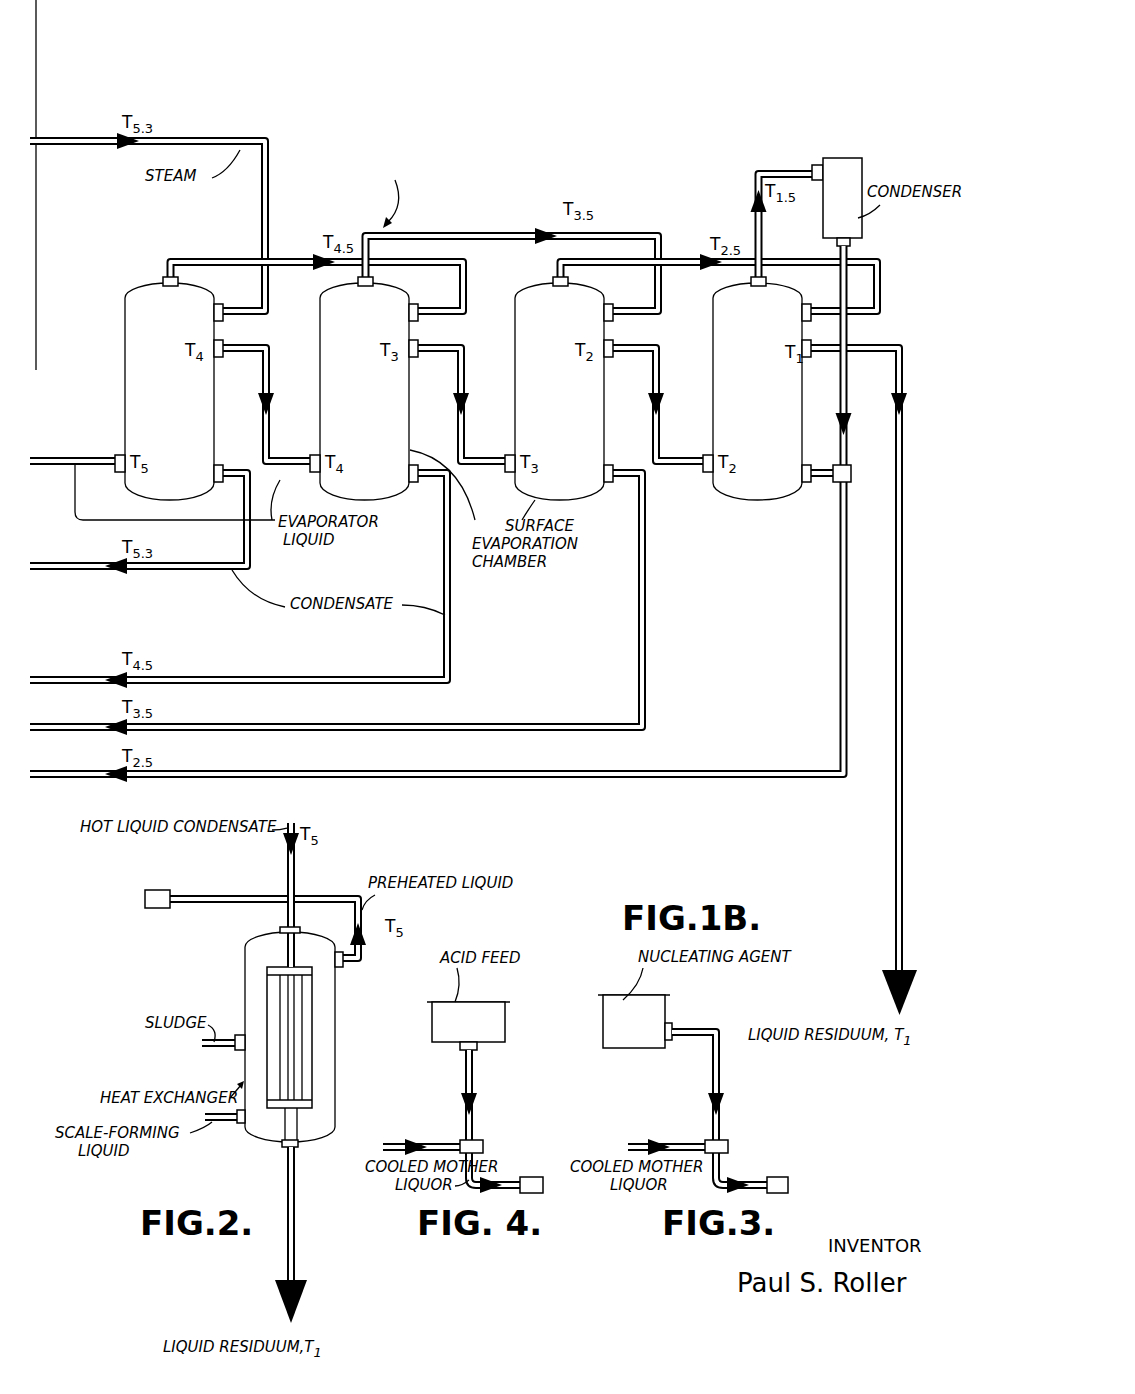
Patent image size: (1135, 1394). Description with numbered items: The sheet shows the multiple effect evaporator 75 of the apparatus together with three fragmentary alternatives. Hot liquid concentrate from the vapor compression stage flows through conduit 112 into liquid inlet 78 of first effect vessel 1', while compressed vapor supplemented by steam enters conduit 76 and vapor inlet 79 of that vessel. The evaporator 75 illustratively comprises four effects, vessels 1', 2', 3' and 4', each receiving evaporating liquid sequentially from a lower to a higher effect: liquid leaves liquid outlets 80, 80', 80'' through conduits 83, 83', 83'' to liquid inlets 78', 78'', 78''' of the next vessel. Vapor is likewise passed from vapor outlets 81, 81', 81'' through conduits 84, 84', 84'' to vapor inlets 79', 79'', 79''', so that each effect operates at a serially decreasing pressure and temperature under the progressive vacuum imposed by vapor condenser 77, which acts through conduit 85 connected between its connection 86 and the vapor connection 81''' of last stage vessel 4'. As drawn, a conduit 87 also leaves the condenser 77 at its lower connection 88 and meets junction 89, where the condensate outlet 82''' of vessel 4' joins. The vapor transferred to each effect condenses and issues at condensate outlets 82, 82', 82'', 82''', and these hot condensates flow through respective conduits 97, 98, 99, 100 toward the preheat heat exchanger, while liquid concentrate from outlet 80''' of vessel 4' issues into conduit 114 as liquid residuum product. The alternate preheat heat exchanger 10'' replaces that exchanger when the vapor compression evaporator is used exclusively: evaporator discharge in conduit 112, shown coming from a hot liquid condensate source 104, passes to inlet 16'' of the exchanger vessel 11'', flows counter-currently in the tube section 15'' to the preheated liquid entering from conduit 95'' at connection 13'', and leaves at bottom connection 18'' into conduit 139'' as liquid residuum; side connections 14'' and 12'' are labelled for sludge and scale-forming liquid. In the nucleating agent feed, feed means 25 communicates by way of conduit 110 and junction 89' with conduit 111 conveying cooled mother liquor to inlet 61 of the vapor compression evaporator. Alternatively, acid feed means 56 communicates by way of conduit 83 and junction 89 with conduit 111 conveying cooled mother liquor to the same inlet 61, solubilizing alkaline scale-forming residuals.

In FIG. 1B, the conduit 76 is at (195, 139).
In FIG. 1B, the conduit 84 is at (317, 268).
In FIG. 1B, the conduit 84' is at (512, 251).
In FIG. 1B, the conduit 84'' is at (719, 264).
In FIG. 1B, the multiple effect evaporator 75 is at (499, 218).
In FIG. 1B, the first effect vessel 1' is at (174, 383).
In FIG. 1B, the vessel 2' is at (369, 383).
In FIG. 1B, the vessel 3' is at (564, 383).
In FIG. 1B, the last stage vessel 4' is at (767, 383).
In FIG. 1B, the vapor outlet 81 is at (150, 271).
In FIG. 1B, the vapor outlet 81' is at (339, 282).
In FIG. 1B, the vapor outlet 81'' is at (541, 273).
In FIG. 1B, the vapor connection 81''' is at (729, 284).
In FIG. 1B, the vapor inlet 79 is at (239, 322).
In FIG. 1B, the vapor inlet 79' is at (436, 322).
In FIG. 1B, the vapor inlet 79'' is at (634, 322).
In FIG. 1B, the vapor inlet 79''' is at (827, 322).
In FIG. 1B, the liquid outlet 80 is at (231, 362).
In FIG. 1B, the liquid outlet 80' is at (428, 362).
In FIG. 1B, the liquid outlet 80'' is at (626, 362).
In FIG. 1B, the liquid outlet 80''' is at (825, 362).
In FIG. 1B, the conduit 83 is at (266, 404).
In FIG. 4, the conduit 83 is at (491, 1095).
In FIG. 1B, the conduit 83' is at (461, 404).
In FIG. 1B, the conduit 83'' is at (658, 404).
In FIG. 1B, the liquid inlet 78 is at (108, 483).
In FIG. 1B, the liquid inlet 78' is at (303, 483).
In FIG. 1B, the liquid inlet 78'' is at (498, 483).
In FIG. 1B, the liquid inlet 78''' is at (696, 483).
In FIG. 1B, the condensate outlet 82 is at (223, 489).
In FIG. 1B, the condensate outlet 82' is at (420, 489).
In FIG. 1B, the condensate outlet 82'' is at (617, 489).
In FIG. 1B, the condensate outlet 82''' is at (816, 489).
In FIG. 1B, the conduit 97 is at (170, 566).
In FIG. 1B, the conduit 98 is at (232, 680).
In FIG. 1B, the conduit 99 is at (237, 727).
In FIG. 1B, the conduit 100 is at (237, 774).
In FIG. 1B, the conduit 85 is at (755, 178).
In FIG. 1B, the outlet 86 is at (815, 165).
In FIG. 1B, the vapor condenser 77 is at (866, 161).
In FIG. 1B, the condenser outlet 88 is at (852, 243).
In FIG. 1B, the condenser condensate line 87 is at (847, 393).
In FIG. 1B, the junction 89 is at (853, 489).
In FIG. 4, the junction 89 is at (492, 1133).
In FIG. 1B, the conduit 114 is at (897, 562).
In FIG. 2, the hot liquid condensate source 104 is at (150, 890).
In FIG. 2, the conduit 112 is at (287, 866).
In FIG. 2, the preheated liquid line 95'' is at (283, 906).
In FIG. 2, the inlet 16'' is at (247, 930).
In FIG. 2, the heat exchanger 10'' is at (299, 928).
In FIG. 2, the vessel shell 11'' is at (315, 1044).
In FIG. 2, the heat exchanger tubes 15'' is at (253, 1053).
In FIG. 2, the preheated liquid inlet 13'' is at (363, 971).
In FIG. 2, the sludge outlet 14'' is at (222, 1058).
In FIG. 2, the scale-forming liquid inlet 12'' is at (224, 1140).
In FIG. 2, the bottom outlet nozzle 18'' is at (314, 1157).
In FIG. 2, the conduit 139'' is at (319, 1235).
In FIG. 4, the acid feed means 56 is at (477, 1002).
In FIG. 4, the conduit 111 is at (392, 1144).
In FIG. 3, the conduit 111 is at (640, 1145).
In FIG. 4, the inlet 61 is at (530, 1177).
In FIG. 3, the inlet 61 is at (780, 1177).
In FIG. 3, the nucleation agent feed means 25 is at (640, 997).
In FIG. 3, the conduit 110 is at (722, 1084).
In FIG. 3, the junction 89' is at (744, 1134).